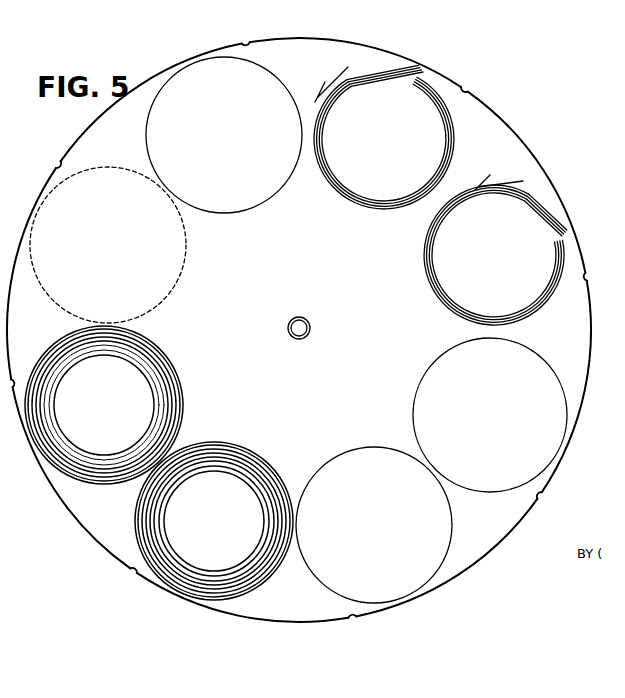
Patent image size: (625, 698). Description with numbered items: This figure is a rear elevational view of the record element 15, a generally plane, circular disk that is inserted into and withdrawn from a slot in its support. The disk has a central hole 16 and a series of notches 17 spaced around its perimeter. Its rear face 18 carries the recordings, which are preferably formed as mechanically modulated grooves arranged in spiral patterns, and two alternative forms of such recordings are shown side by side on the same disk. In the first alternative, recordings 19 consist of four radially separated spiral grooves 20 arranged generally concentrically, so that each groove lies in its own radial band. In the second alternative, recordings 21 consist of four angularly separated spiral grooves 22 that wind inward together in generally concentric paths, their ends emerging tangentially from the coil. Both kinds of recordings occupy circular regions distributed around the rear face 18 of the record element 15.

The record element 15 is at (190, 52).
The central hole 16 is at (301, 318).
The notches 17 is at (465, 92).
The rear face 18 is at (288, 268).
The recordings 19 is at (206, 443).
The spiral grooves 20 is at (254, 462).
The recordings 21 is at (383, 208).
The spiral grooves 22 is at (402, 72).